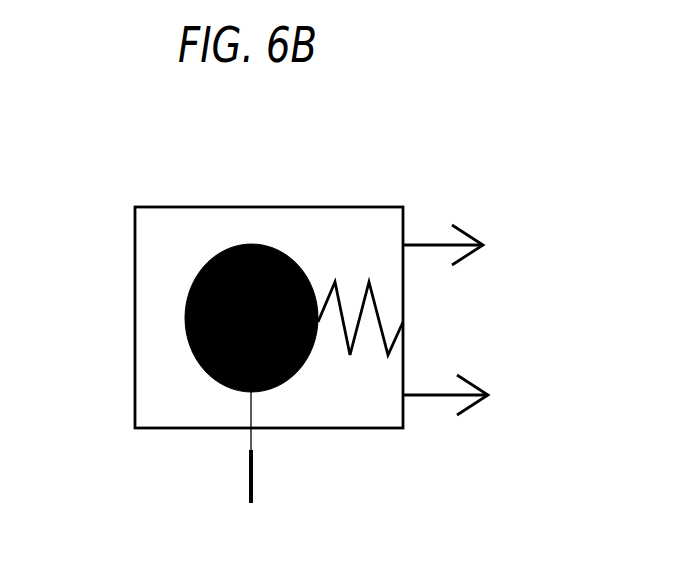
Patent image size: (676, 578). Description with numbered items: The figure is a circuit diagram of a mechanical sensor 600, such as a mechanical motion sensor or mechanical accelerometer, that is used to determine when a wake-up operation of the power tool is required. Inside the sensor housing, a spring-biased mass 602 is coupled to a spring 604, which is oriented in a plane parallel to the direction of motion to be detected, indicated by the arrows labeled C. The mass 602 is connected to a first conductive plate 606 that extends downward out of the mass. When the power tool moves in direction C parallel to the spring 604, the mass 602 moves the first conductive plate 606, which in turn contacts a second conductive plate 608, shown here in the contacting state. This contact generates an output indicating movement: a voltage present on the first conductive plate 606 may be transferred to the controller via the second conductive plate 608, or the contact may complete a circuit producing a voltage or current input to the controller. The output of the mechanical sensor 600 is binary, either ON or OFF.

The mechanical sensor 600 is at (175, 218).
The spring-biased mass 602 is at (257, 245).
The spring 604 is at (380, 313).
The first conductive plate 606 is at (254, 440).
The second conductive plate 608 is at (250, 503).